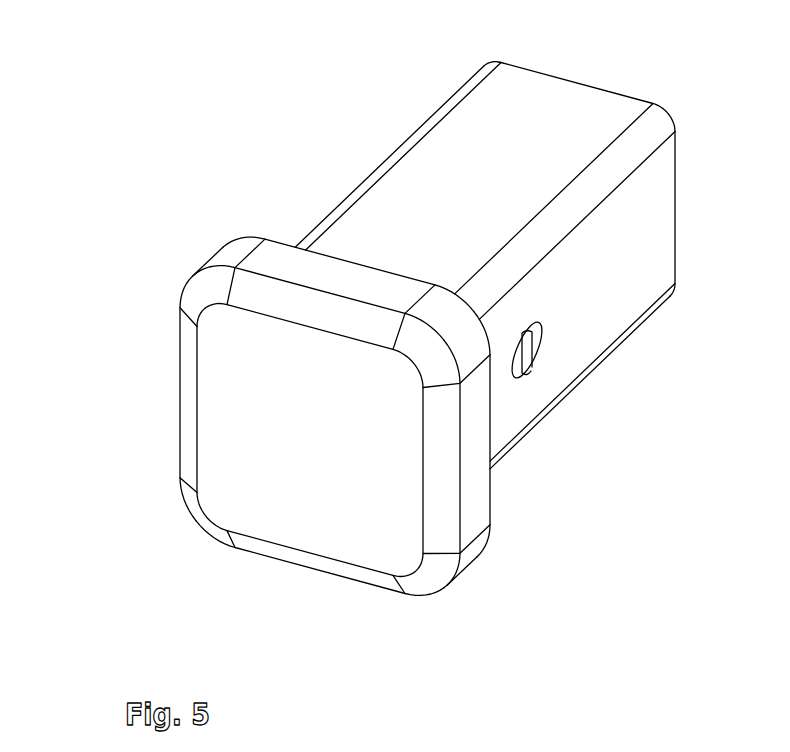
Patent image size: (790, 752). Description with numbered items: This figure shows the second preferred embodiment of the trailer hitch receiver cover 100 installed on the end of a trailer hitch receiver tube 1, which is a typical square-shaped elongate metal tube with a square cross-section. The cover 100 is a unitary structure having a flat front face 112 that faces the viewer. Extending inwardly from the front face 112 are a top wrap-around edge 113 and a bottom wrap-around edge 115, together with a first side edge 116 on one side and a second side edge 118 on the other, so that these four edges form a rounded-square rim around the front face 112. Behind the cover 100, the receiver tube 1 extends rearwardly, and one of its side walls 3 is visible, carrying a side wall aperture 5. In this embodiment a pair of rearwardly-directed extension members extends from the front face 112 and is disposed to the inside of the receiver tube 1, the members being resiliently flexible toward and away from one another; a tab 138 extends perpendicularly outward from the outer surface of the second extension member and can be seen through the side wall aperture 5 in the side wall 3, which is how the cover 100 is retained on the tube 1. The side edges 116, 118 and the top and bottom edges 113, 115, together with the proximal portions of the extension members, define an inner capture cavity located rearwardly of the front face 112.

The trailer hitch receiver cover 100 is at (391, 339).
The trailer hitch receiver tube 1 is at (565, 112).
The side wall 3 is at (640, 242).
The side wall aperture 5 is at (538, 338).
The tab 138 is at (527, 357).
The front face 112 is at (305, 508).
The top wrap-around edge 113 is at (323, 308).
The bottom wrap-around edge 115 is at (328, 565).
The first side edge 116 is at (185, 413).
The second side edge 118 is at (448, 467).